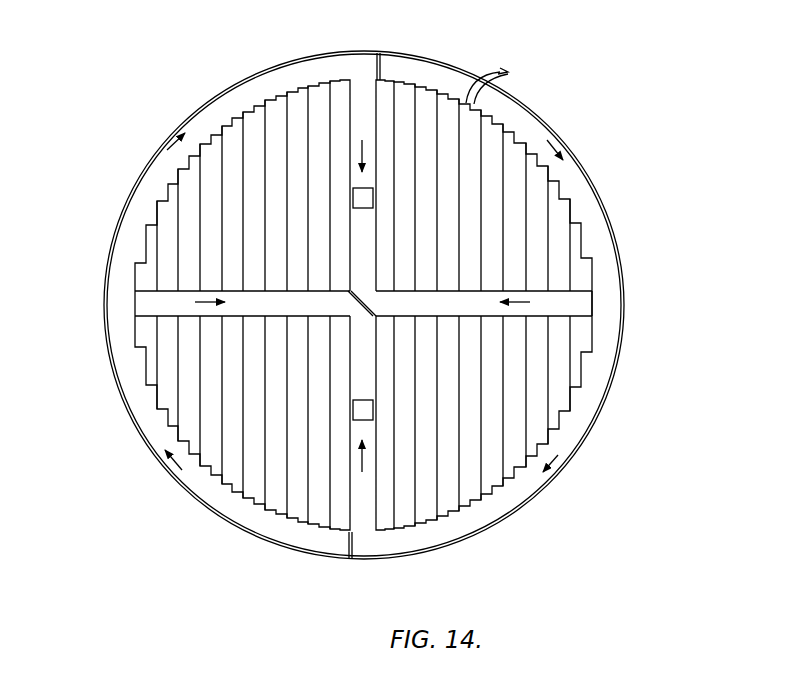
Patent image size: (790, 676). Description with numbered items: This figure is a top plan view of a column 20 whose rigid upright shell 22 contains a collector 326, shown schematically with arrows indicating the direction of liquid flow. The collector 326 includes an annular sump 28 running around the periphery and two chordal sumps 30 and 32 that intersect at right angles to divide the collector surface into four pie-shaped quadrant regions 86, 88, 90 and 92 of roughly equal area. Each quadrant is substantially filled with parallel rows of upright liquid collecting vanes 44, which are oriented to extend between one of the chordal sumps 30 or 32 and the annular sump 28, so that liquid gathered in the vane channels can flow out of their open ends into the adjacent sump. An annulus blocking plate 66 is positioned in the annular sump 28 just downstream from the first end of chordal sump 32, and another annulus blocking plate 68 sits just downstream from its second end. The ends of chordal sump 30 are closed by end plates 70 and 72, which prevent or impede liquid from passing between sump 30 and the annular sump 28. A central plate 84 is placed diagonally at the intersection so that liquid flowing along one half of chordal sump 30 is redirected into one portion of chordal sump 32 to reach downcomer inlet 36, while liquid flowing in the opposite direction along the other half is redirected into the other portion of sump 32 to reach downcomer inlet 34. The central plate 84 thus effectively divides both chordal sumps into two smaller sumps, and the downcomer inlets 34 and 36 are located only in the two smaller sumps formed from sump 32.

The column 20 is at (612, 208).
The shell 22 is at (553, 477).
The annular sump 28 is at (152, 178).
The chordal sump 30 is at (575, 310).
The chordal sump 32 is at (357, 92).
The downcomer inlet 34 is at (373, 410).
The downcomer inlet 36 is at (353, 200).
The liquid collecting vane 44 is at (503, 83).
The annulus blocking plate 66 is at (382, 62).
The annulus blocking plate 68 is at (348, 550).
The end plate 70 is at (592, 298).
The end plate 72 is at (135, 300).
The central plate 84 is at (375, 300).
The quadrant region 86 is at (517, 151).
The quadrant region 88 is at (556, 394).
The quadrant region 90 is at (256, 121).
The quadrant region 92 is at (254, 493).
The collector 326 is at (570, 176).